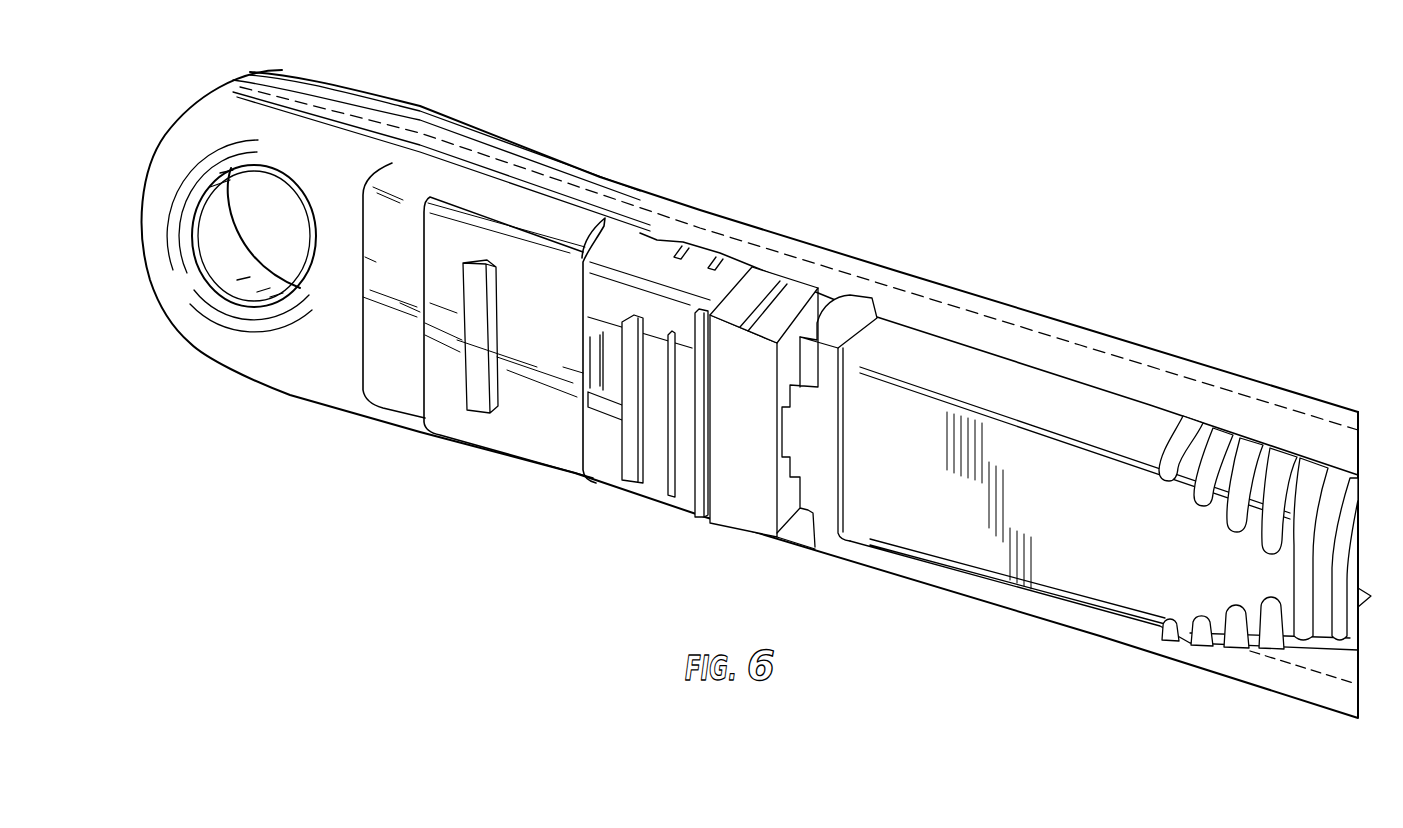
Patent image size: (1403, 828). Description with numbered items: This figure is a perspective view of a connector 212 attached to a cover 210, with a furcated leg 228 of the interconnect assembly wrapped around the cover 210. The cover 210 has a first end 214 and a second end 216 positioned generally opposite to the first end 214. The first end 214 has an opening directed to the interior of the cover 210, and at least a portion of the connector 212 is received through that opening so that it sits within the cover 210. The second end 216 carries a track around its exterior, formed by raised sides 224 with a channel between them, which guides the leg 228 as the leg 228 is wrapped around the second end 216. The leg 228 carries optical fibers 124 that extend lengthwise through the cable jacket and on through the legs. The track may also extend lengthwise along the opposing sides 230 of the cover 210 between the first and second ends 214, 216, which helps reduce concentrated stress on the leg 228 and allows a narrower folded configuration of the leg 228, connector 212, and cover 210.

The optical fibers 124 is at (1113, 353).
The cover 210 is at (393, 368).
The connector 212 is at (684, 467).
The first end 214 is at (590, 500).
The second end 216 is at (171, 352).
The raised sides 224 is at (403, 106).
The leg 228 is at (993, 300).
The opposing sides 230 is at (545, 128).